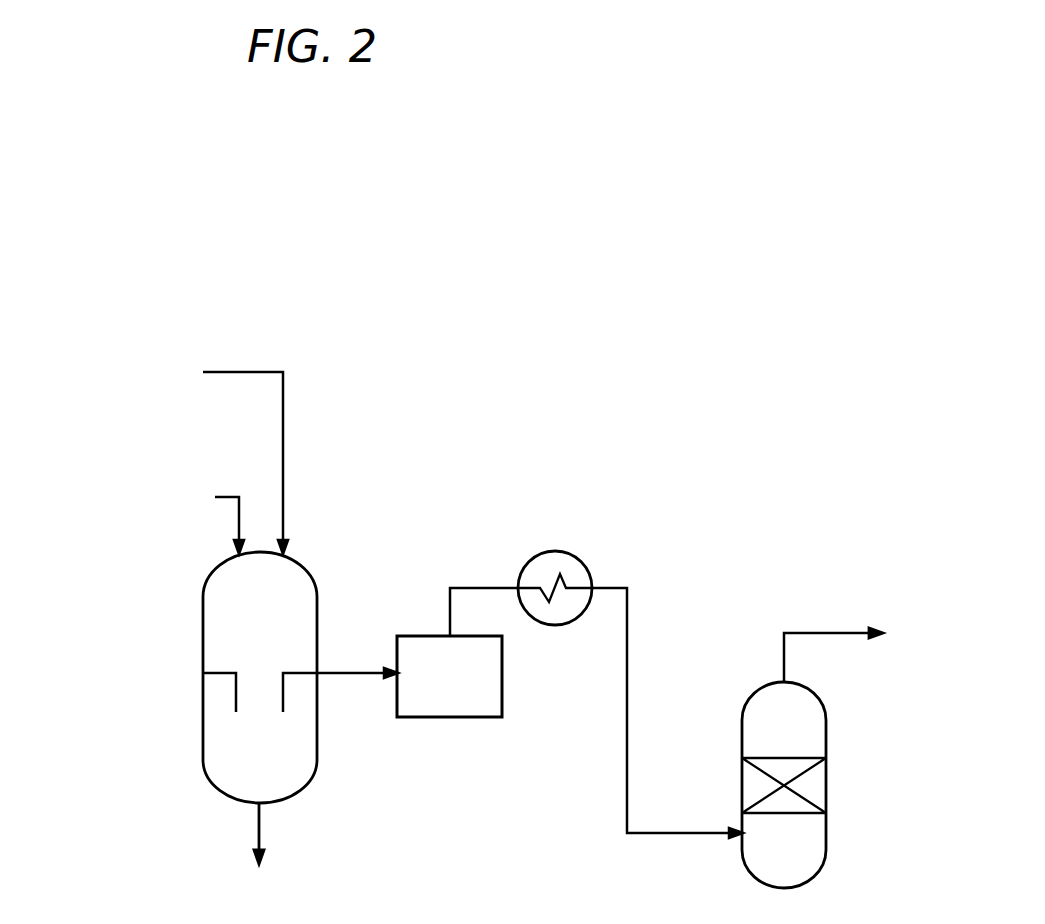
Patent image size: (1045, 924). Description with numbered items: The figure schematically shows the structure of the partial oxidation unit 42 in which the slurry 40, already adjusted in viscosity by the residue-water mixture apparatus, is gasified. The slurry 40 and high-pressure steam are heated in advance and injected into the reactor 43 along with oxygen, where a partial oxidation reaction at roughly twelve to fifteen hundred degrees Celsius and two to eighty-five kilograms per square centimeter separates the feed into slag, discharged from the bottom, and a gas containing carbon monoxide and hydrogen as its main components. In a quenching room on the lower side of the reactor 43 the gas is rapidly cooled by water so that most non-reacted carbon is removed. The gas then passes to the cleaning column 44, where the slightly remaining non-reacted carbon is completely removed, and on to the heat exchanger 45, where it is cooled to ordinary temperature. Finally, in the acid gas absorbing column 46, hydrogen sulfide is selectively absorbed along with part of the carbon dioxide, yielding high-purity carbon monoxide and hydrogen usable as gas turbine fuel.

The slurry 40 is at (215, 497).
The partial oxidation unit 42 is at (526, 347).
The reactor 43 is at (202, 730).
The cleaning column 44 is at (473, 717).
The heat exchanger 45 is at (577, 553).
The acid gas absorbing column 46 is at (826, 840).